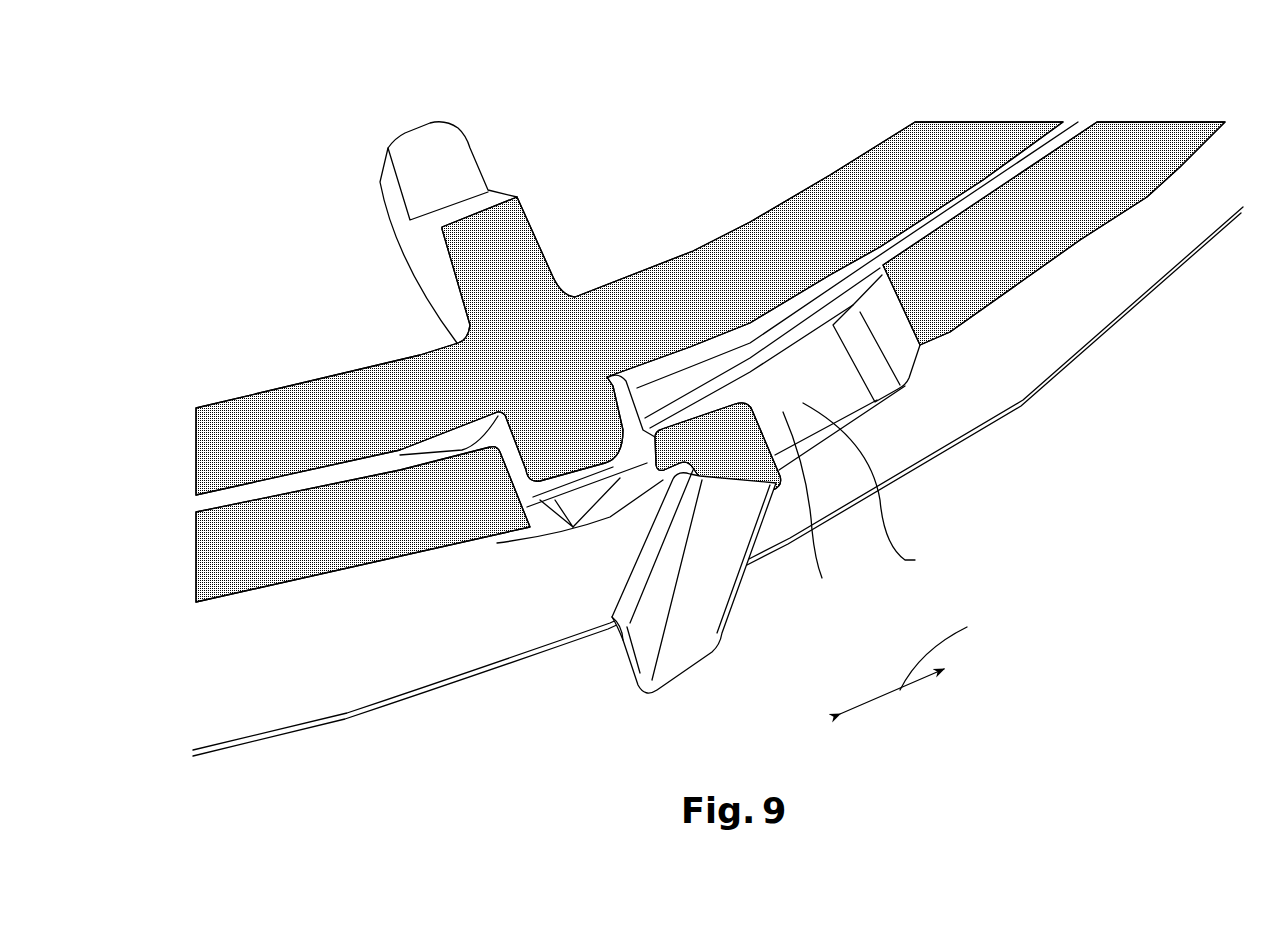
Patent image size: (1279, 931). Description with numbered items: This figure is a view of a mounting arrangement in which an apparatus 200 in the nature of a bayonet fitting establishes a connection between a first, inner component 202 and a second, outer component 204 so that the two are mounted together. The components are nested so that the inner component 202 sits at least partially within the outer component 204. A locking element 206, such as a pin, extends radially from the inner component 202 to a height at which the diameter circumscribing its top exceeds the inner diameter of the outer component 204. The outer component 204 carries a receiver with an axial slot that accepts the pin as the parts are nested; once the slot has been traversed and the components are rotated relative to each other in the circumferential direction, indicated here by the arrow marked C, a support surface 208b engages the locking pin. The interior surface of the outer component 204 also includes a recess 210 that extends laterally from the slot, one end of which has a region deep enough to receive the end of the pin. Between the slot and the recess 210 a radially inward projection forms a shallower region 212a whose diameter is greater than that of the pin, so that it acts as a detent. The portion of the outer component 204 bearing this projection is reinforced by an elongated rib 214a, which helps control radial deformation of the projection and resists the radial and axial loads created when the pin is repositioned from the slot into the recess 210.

The apparatus 200 is at (634, 242).
The inner component 202 is at (948, 122).
The outer component 204 is at (1142, 122).
The locking element 206 is at (553, 530).
The support surface 208b is at (898, 496).
The recess 210 is at (597, 532).
The shallower region 212a is at (771, 513).
The elongated rib 214a is at (727, 573).
The direction of rotation C is at (921, 662).